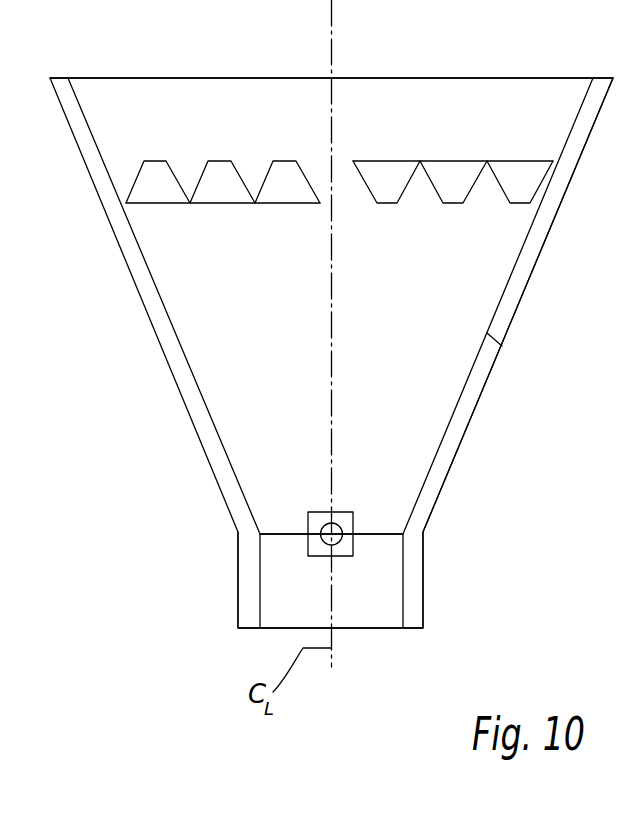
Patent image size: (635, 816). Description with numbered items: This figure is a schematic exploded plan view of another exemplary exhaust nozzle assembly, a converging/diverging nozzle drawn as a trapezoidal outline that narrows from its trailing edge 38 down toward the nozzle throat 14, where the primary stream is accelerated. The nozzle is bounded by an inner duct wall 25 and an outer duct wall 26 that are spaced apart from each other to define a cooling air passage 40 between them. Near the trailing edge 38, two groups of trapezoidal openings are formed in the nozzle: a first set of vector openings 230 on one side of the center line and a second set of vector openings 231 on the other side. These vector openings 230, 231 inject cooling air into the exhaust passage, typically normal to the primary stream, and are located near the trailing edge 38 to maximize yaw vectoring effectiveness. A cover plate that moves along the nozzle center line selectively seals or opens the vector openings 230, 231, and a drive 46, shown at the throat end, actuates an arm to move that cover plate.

The nozzle throat 14 is at (387, 534).
The inner duct wall 25 is at (502, 346).
The outer duct wall 26 is at (478, 407).
The trailing edge 38 is at (545, 78).
The cooling air passage 40 is at (532, 250).
The drive 46 is at (308, 557).
The first set of vector openings 230 is at (278, 175).
The second set of vector openings 231 is at (520, 172).